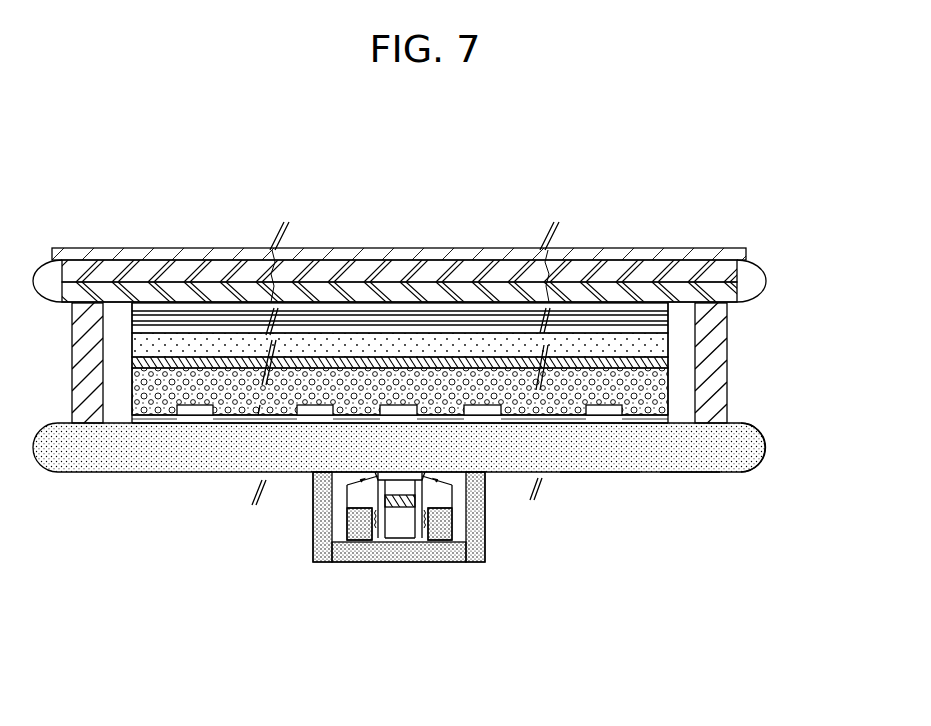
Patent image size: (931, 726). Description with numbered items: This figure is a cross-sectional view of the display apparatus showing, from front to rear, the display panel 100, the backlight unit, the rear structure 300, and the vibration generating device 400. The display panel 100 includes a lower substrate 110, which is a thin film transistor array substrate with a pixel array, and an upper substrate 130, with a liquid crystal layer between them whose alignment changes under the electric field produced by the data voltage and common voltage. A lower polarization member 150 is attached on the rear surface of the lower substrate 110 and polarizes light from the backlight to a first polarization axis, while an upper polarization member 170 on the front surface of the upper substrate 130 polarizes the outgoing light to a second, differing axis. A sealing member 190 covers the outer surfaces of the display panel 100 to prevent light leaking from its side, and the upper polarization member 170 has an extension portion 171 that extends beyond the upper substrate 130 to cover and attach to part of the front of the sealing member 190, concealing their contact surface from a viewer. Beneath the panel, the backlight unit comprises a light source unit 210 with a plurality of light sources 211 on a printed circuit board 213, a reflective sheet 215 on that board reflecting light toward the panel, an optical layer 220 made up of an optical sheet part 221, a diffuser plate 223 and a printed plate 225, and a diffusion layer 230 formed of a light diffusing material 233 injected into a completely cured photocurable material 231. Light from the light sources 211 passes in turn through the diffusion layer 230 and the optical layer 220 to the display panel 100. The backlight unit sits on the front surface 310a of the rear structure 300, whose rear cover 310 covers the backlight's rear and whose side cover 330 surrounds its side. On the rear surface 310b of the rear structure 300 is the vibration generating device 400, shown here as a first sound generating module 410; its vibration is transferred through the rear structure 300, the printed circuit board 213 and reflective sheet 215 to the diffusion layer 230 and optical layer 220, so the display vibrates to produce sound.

The display panel 100 is at (255, 196).
The lower substrate 110 is at (195, 290).
The upper substrate 130 is at (145, 268).
The lower polarization member 150 is at (241, 302).
The upper polarization member 170 is at (95, 250).
The extension portion 171 is at (744, 248).
The sealing member 190 is at (47, 266).
The light source unit 210 is at (135, 532).
The light sources 211 is at (195, 413).
The printed circuit board 213 is at (147, 426).
The reflective sheet 215 is at (227, 418).
The optical layer 220 is at (440, 196).
The optical sheet part 221 is at (322, 324).
The diffuser plate 223 is at (370, 346).
The printed plate 225 is at (415, 362).
The diffusion layer 230 is at (802, 362).
The photocurable material 231 is at (662, 380).
The light diffusing material 233 is at (667, 397).
The rear structure 300 is at (596, 534).
The rear cover 310 is at (659, 472).
The front surface of the rear structure 310a is at (614, 470).
The rear surface of the rear structure 310b is at (735, 472).
The side cover 330 is at (703, 470).
The vibration generating device 400 is at (439, 642).
The first sound generating module 410 is at (420, 566).